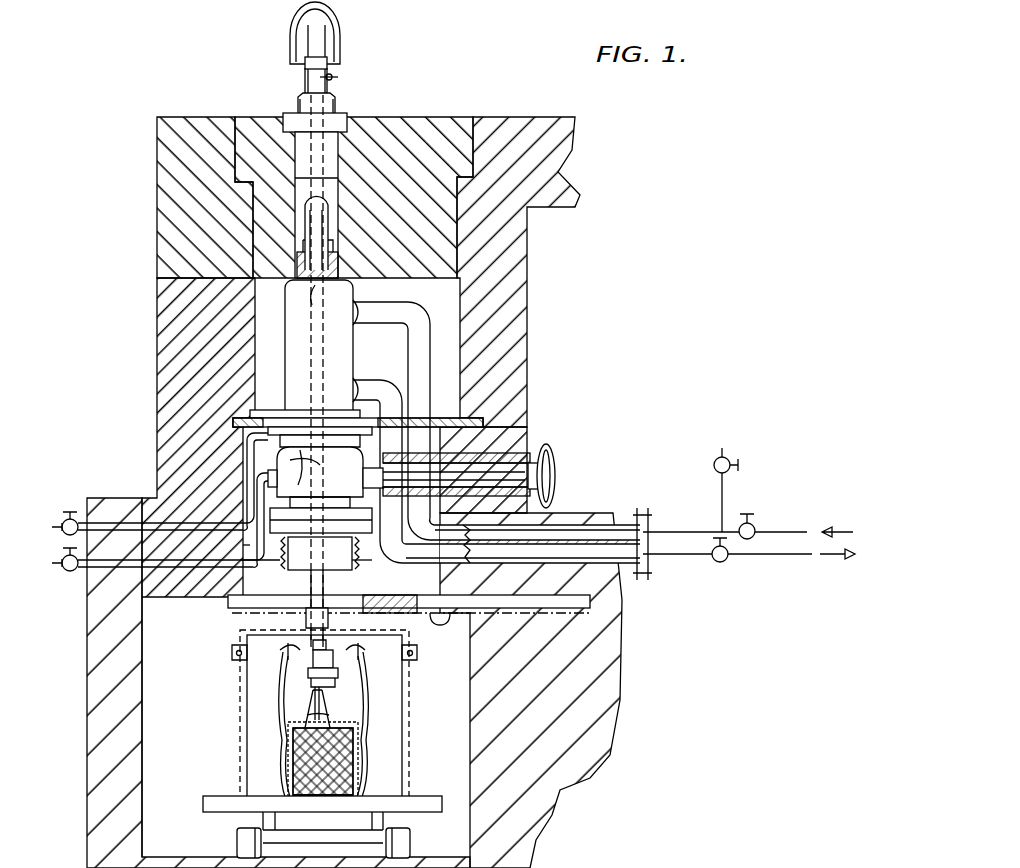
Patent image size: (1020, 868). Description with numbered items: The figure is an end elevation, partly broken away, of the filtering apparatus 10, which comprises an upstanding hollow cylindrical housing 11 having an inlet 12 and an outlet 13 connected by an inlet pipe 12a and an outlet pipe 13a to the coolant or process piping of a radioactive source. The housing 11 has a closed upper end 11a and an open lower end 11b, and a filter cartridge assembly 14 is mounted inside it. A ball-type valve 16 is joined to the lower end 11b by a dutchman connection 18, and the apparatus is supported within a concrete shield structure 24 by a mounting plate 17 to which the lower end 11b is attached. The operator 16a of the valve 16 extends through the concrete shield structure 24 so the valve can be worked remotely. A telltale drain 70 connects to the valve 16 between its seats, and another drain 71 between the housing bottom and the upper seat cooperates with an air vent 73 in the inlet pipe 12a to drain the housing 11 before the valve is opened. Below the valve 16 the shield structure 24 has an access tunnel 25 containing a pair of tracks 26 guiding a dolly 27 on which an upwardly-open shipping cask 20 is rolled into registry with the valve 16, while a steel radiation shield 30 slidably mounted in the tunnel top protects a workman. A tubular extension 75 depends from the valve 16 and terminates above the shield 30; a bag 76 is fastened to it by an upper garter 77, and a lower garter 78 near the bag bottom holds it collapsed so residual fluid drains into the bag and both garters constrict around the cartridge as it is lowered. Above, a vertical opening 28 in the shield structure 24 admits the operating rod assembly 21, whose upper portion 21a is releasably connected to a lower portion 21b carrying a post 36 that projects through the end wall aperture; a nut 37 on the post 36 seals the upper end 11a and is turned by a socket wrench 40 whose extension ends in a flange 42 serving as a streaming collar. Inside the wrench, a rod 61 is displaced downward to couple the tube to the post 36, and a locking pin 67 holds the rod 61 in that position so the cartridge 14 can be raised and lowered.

The filtering apparatus 10 is at (354, 475).
The housing 11 is at (300, 352).
The closed upper end 11a is at (300, 264).
The open lower end 11b is at (258, 414).
The inlet 12 is at (360, 303).
The inlet pipe 12a is at (418, 312).
The outlet 13 is at (358, 386).
The outlet pipe 13a is at (378, 395).
The filter cartridge assembly 14 is at (345, 757).
The valve 16 is at (270, 473).
The operator 16a is at (557, 463).
The mounting plate 17 is at (240, 421).
The dutchman connection 18 is at (262, 440).
The shipping cask 20 is at (250, 722).
The operating rod assembly 21 is at (318, 624).
The upper portion 21a is at (305, 80).
The lower portion 21b is at (316, 697).
The concrete shield structure 24 is at (527, 125).
The access tunnel 25 is at (155, 770).
The tracks 26 is at (240, 848).
The dolly 27 is at (215, 812).
The opening 28 is at (338, 158).
The radiation shield 30 is at (432, 615).
The post 36 is at (337, 667).
The nut 37 is at (314, 300).
The socket wrench 40 is at (300, 198).
The flange 42 is at (347, 116).
The rod 61 is at (318, 45).
The locking pin 67 is at (333, 77).
The telltale drain 70 is at (185, 565).
The drain 71 is at (115, 500).
The air vent 73 is at (726, 480).
The tubular extension 75 is at (304, 560).
The bag 76 is at (357, 565).
The garter 77 is at (290, 545).
The garter 78 is at (283, 560).